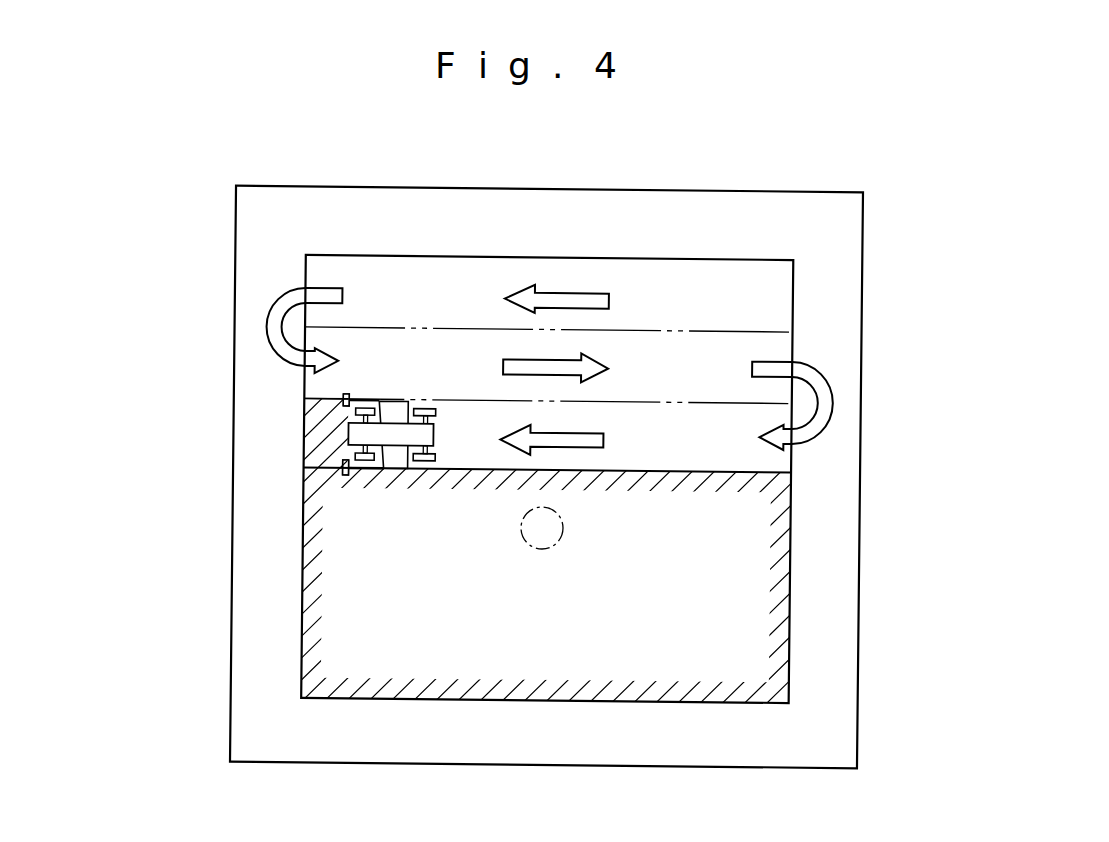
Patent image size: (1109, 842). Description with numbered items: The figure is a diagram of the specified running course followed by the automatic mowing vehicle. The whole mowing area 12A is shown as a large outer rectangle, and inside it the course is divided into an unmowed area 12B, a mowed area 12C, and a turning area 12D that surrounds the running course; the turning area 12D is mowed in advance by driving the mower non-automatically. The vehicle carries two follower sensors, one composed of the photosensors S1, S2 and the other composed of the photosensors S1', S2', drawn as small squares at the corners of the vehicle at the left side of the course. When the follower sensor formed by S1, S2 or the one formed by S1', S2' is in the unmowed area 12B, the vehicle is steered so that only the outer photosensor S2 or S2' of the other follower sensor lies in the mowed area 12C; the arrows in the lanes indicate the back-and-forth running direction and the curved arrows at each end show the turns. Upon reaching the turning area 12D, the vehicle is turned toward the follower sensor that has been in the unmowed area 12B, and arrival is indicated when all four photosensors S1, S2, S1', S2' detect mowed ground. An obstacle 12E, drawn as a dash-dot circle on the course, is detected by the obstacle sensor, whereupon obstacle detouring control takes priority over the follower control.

The mowing area 12A is at (230, 448).
The unmowed area 12B is at (748, 622).
The mowed area 12C is at (460, 348).
The turning area 12D is at (275, 575).
The obstacle 12E is at (524, 546).
The photosensor S1 is at (268, 510).
The photosensor S2 is at (370, 514).
The photosensor S1' is at (275, 386).
The photosensor S2' is at (383, 338).